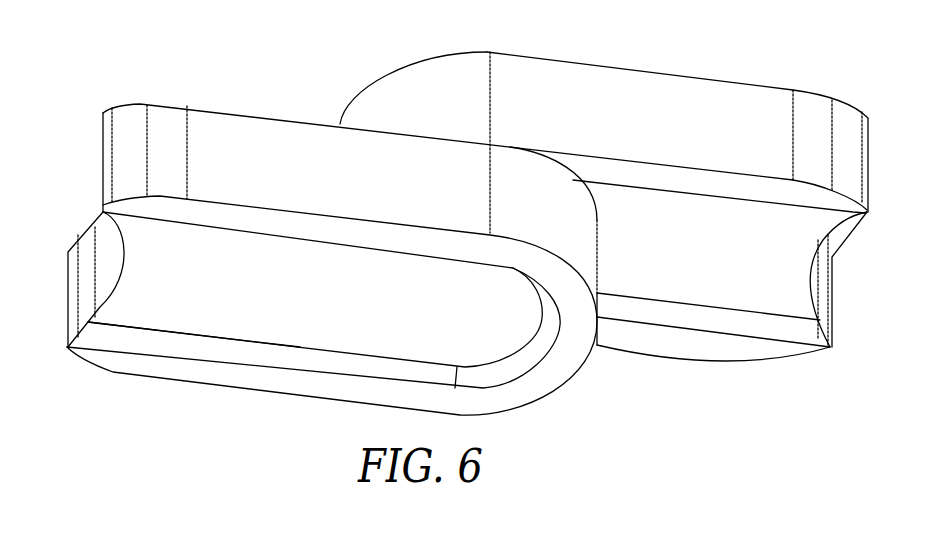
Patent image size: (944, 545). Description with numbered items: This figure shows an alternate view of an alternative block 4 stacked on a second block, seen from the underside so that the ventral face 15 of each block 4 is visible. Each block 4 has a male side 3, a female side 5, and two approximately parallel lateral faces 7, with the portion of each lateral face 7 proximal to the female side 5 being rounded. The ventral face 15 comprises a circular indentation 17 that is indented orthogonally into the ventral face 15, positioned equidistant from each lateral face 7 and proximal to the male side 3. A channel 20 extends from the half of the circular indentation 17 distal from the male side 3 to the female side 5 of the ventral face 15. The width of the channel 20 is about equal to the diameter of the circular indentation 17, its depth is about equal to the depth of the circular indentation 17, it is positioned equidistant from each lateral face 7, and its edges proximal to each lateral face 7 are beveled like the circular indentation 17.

The male side 3 is at (590, 330).
The alternative block 4 is at (227, 104).
The female side 5 is at (117, 249).
The lateral face 7 is at (630, 85).
The ventral face 15 is at (178, 370).
The circular indentation 17 is at (477, 345).
The channel 20 is at (313, 330).